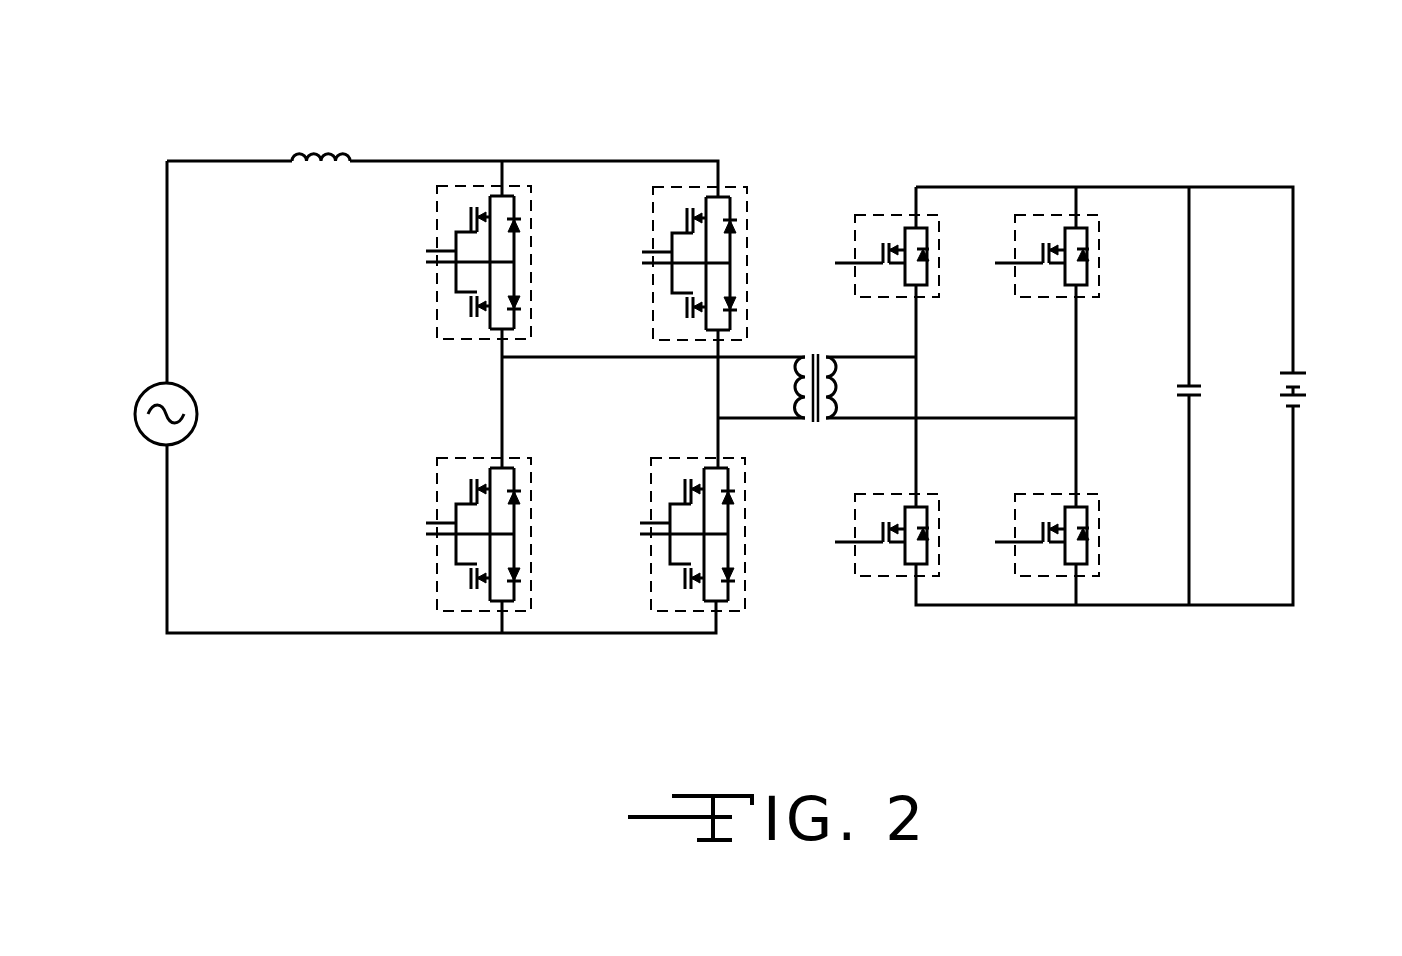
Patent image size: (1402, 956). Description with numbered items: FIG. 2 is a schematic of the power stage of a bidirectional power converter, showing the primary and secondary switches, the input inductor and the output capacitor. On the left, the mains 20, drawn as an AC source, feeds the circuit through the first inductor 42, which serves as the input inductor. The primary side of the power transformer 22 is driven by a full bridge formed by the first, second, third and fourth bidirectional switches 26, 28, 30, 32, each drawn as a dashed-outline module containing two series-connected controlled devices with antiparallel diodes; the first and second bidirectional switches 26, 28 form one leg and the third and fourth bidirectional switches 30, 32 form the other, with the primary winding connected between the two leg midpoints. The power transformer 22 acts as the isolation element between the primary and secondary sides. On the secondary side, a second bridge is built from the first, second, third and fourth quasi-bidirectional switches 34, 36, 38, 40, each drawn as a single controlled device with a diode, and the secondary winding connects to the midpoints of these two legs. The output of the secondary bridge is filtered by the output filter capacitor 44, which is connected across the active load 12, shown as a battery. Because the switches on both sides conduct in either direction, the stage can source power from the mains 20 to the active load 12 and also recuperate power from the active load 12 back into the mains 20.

The active load 12 is at (1300, 390).
The mains 20 is at (135, 412).
The power transformer 22 is at (812, 355).
The first bidirectional switch 26 is at (437, 215).
The second bidirectional switch 28 is at (440, 457).
The third bidirectional switch 30 is at (730, 185).
The fourth bidirectional switch 32 is at (728, 605).
The first quasi-bidirectional switch 34 is at (882, 215).
The second quasi-bidirectional switch 36 is at (880, 577).
The third quasi-bidirectional switch 38 is at (1040, 215).
The fourth quasi-bidirectional switch 40 is at (1032, 575).
The first inductor 42 is at (316, 150).
The output filter capacitor 44 is at (1198, 386).